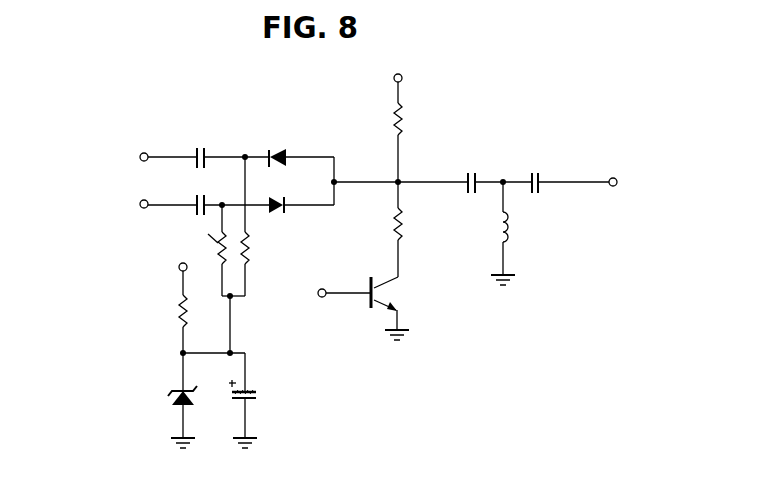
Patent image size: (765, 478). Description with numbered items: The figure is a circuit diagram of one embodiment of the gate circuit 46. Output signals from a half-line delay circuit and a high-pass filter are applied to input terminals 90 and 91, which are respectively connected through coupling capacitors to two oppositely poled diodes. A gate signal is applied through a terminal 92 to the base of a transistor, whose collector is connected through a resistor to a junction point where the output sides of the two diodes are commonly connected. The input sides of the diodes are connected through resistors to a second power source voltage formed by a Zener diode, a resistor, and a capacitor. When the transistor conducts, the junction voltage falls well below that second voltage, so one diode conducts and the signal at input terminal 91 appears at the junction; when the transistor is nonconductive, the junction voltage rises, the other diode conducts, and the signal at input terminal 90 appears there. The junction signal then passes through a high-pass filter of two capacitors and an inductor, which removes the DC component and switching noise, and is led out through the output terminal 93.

The gate circuit 46 is at (242, 74).
The input terminal 90 is at (143, 153).
The input terminal 91 is at (143, 208).
The terminal 92 is at (322, 298).
The output terminal 93 is at (613, 178).